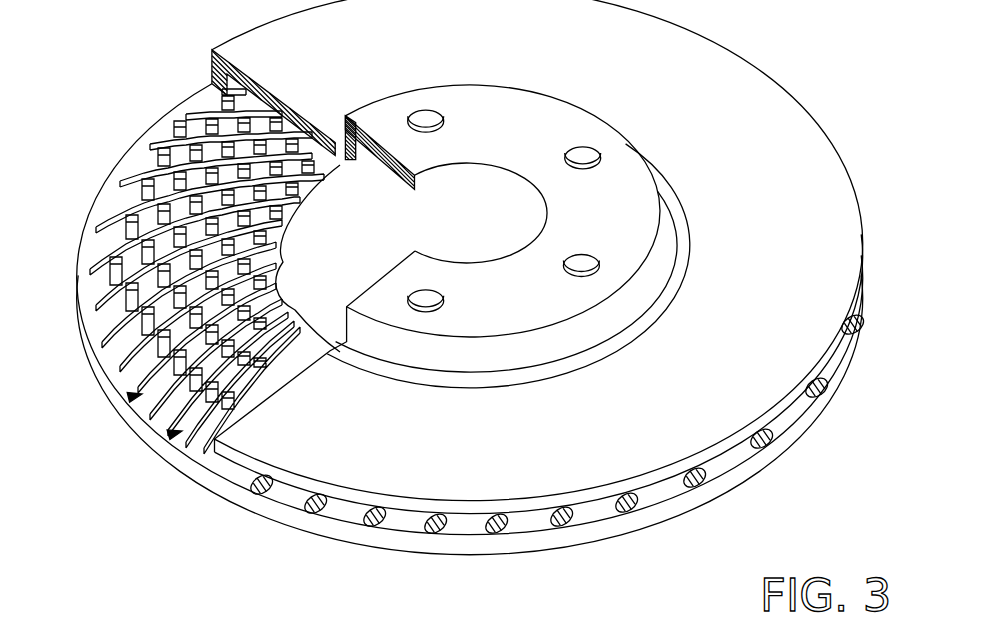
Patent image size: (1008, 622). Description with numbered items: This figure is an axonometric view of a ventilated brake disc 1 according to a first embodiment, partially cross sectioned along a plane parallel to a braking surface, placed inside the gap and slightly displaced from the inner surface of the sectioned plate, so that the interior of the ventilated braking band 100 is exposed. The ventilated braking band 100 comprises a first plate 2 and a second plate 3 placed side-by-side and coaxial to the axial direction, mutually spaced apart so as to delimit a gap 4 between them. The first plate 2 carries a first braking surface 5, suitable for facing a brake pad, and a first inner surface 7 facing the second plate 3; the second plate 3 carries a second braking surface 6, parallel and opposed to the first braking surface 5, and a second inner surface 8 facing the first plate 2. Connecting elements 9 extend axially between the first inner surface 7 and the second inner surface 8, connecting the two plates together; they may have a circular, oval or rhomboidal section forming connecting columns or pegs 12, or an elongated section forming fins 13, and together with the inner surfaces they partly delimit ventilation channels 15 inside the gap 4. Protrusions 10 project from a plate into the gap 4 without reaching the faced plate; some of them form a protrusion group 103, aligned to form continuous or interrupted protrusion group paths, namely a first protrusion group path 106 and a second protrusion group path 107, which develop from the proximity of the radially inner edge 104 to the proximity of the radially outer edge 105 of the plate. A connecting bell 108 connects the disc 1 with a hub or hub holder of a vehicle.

The ventilated braking band 100 is at (780, 324).
The ventilated brake disc 1 is at (713, 398).
The first plate 2 is at (720, 480).
The second plate 3 is at (630, 450).
The gap 4 is at (180, 432).
The first braking surface 5 is at (380, 546).
The second braking surface 6 is at (311, 436).
The first inner surface 7 is at (96, 318).
The second inner surface 8 is at (213, 78).
The connecting elements 9 is at (80, 255).
The protrusions 10 is at (150, 148).
The connecting columns or pegs 12 is at (170, 127).
The fins 13 is at (128, 160).
The ventilation channels 15 is at (140, 395).
The protrusion group 103 is at (303, 217).
The radially inner edge 104 is at (307, 181).
The radially outer edge 105 is at (213, 62).
The first protrusion group path 106 is at (95, 300).
The second protrusion group path 107 is at (88, 232).
The connecting bell 108 is at (464, 304).